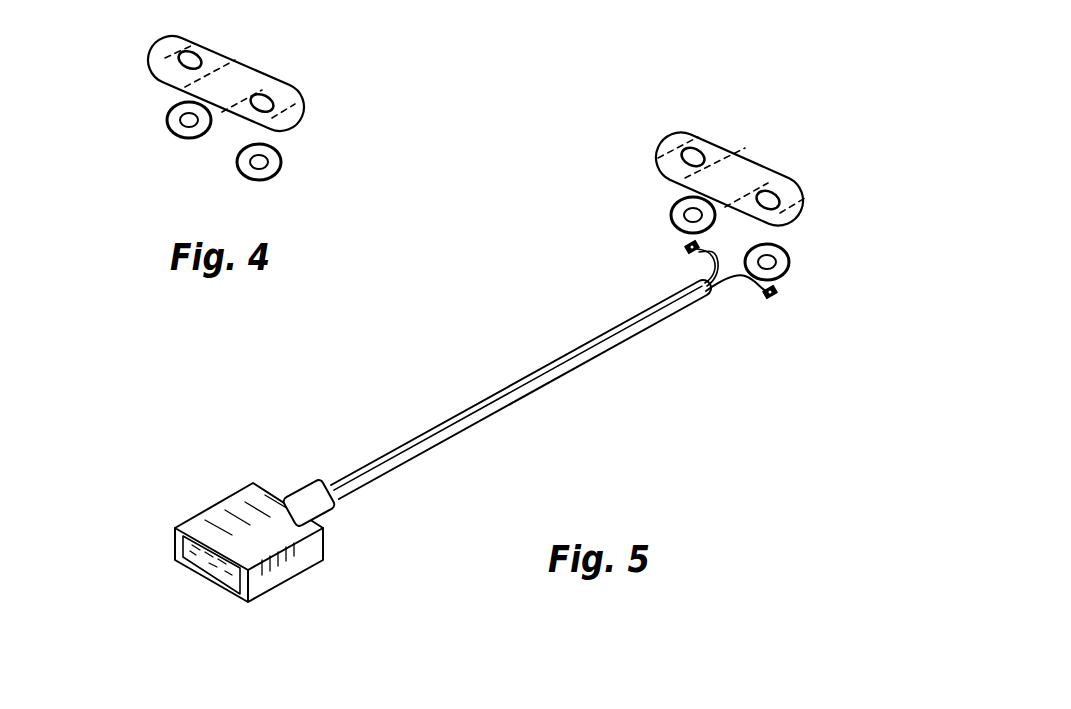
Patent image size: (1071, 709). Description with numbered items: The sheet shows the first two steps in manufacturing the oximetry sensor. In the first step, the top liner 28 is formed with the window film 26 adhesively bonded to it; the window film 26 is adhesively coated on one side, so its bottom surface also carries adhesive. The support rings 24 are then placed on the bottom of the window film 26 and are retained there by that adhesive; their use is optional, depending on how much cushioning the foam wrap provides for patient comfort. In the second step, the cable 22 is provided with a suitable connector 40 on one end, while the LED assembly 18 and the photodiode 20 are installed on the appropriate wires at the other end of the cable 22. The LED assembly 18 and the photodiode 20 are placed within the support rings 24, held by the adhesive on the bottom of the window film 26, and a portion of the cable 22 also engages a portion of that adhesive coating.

In FIG. 5, the LED assembly 18 is at (776, 297).
In FIG. 5, the photodiode 20 is at (688, 250).
In FIG. 5, the cable 22 is at (590, 353).
In FIG. 4, the support rings 24 is at (283, 161).
In FIG. 5, the support rings 24 is at (790, 262).
In FIG. 4, the window film 26 is at (168, 83).
In FIG. 4, the top liner 28 is at (250, 64).
In FIG. 5, the top liner 28 is at (755, 160).
In FIG. 5, the connector 40 is at (300, 557).